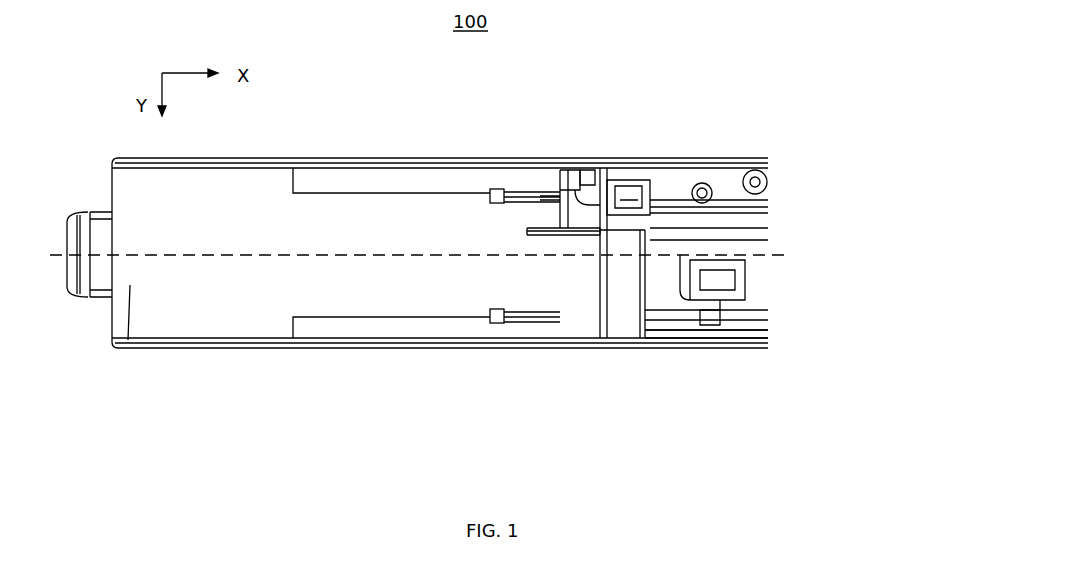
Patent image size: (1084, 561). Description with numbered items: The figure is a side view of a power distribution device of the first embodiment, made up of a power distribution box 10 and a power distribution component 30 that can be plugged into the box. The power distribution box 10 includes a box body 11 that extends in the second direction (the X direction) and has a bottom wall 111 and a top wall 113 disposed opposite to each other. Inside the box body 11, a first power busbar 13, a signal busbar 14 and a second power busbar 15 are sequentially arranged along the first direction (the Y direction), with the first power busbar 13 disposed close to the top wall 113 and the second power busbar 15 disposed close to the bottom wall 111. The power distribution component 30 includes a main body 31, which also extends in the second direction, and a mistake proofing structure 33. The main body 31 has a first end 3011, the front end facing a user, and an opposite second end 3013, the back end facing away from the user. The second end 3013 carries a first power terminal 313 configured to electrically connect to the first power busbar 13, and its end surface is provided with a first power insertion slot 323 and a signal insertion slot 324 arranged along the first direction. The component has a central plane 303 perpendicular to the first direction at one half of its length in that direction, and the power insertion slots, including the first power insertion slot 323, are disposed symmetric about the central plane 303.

The power distribution box 10 is at (890, 62).
The box body 11 is at (840, 212).
The bottom wall 111 is at (757, 337).
The top wall 113 is at (740, 173).
The first power busbar 13 is at (615, 220).
The signal busbar 14 is at (618, 232).
The second power busbar 15 is at (647, 312).
The power distribution component 30 is at (650, 434).
The main body 31 is at (568, 388).
The first end 3011 is at (127, 348).
The second end 3013 is at (530, 275).
The central plane 303 is at (165, 255).
The first power terminal 313 is at (535, 200).
The first power insertion slot 323 is at (503, 197).
The signal insertion slot 324 is at (553, 228).
The mistake proofing structure 33 is at (590, 283).